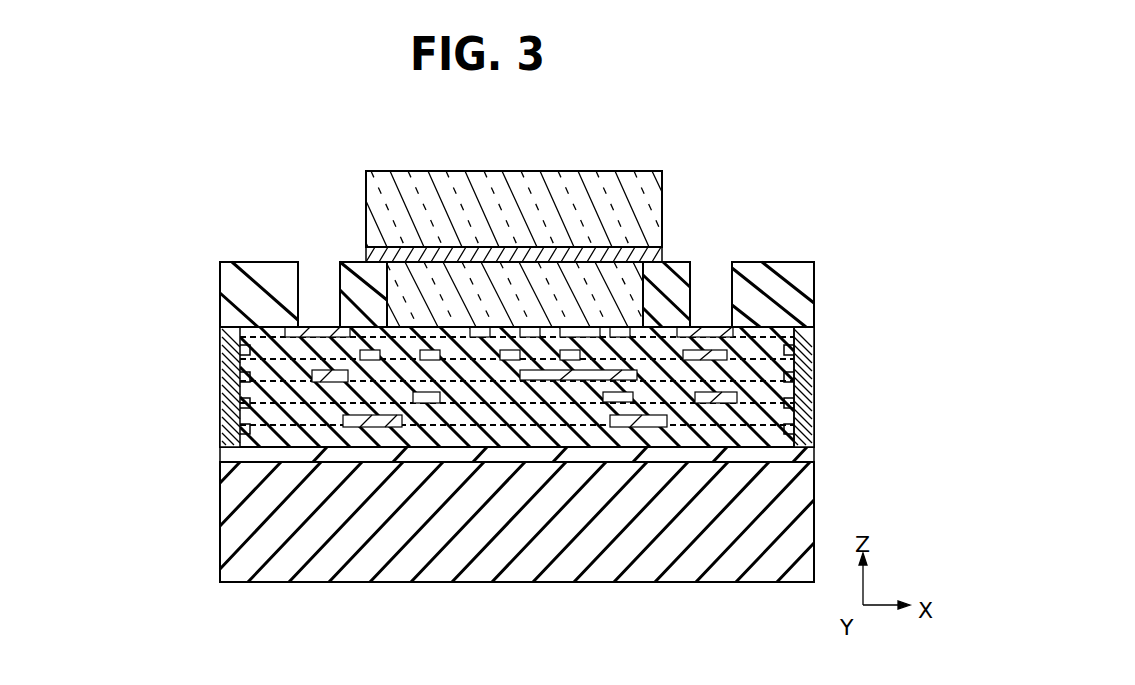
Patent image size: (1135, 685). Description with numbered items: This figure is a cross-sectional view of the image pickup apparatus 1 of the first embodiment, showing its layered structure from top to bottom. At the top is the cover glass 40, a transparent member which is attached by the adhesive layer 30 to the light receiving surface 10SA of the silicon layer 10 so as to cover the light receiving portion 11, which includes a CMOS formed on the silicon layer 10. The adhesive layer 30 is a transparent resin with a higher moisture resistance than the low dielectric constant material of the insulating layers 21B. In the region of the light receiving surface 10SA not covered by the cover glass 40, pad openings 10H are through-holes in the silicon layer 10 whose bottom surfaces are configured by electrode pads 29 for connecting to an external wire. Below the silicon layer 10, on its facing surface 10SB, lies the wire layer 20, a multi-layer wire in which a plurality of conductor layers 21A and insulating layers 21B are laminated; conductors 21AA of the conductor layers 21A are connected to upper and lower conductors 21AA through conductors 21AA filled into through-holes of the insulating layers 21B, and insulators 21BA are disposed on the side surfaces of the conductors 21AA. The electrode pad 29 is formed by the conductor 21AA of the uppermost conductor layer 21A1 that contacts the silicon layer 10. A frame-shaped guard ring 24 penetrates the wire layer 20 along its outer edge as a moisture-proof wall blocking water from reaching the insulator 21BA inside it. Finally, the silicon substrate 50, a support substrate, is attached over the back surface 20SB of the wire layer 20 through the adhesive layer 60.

The image pickup apparatus 1 is at (205, 192).
The silicon layer 10 is at (220, 302).
The pad opening 10H is at (318, 308).
The light receiving surface 10SA is at (676, 260).
The facing surface 10SB is at (800, 352).
The light receiving portion 11 is at (517, 250).
The wire layer 20 is at (496, 459).
The conductor layer 21A is at (220, 336).
The insulating layer 21B is at (220, 365).
The conductor 21AA is at (520, 440).
The uppermost conductor layer 21A1 is at (568, 380).
The insulator 21BA is at (633, 447).
The guard ring 24 is at (812, 385).
The electrode pad 29 is at (711, 325).
The adhesive layer 30 is at (366, 258).
The cover glass 40 is at (373, 171).
The silicon substrate 50 is at (220, 531).
The adhesive layer 60 is at (220, 457).
The back surface 20SB is at (738, 448).